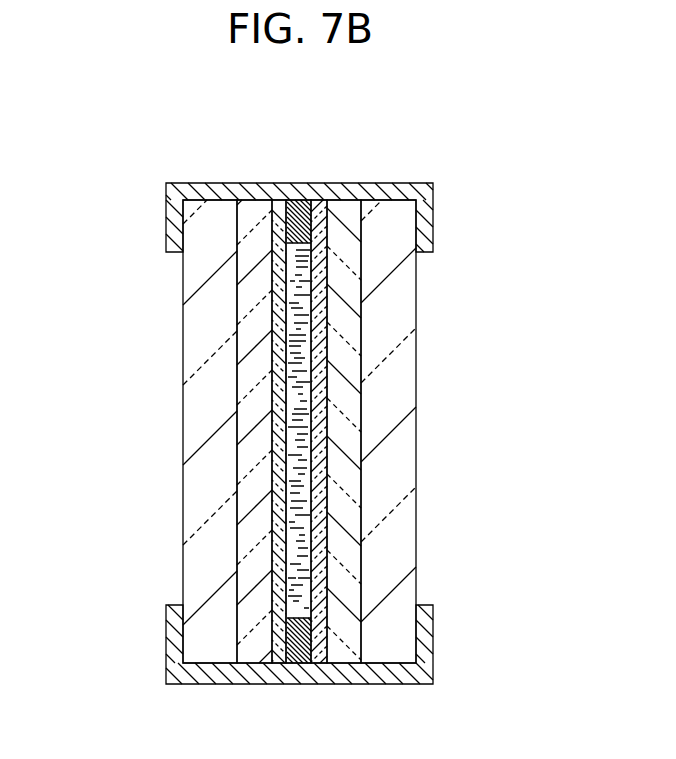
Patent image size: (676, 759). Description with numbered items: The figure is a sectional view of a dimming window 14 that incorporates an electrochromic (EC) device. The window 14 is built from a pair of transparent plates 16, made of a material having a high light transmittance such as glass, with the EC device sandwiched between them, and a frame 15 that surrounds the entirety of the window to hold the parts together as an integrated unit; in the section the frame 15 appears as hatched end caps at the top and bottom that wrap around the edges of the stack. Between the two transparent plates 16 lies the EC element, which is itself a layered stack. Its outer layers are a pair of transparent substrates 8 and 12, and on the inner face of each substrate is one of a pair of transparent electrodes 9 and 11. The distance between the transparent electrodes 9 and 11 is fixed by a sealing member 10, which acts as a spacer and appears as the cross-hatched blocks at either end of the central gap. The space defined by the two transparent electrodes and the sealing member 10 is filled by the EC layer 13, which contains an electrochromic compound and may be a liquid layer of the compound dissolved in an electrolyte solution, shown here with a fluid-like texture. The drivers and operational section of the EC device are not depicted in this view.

The transparent substrate 8 is at (253, 225).
The transparent electrode 9 is at (281, 213).
The sealing member 10 is at (385, 376).
The transparent electrode 11 is at (318, 213).
The transparent substrate 12 is at (345, 222).
The EC layer 13 is at (295, 322).
The window 14 is at (128, 154).
The frame 15 is at (418, 192).
The transparent plates 16 is at (205, 542).